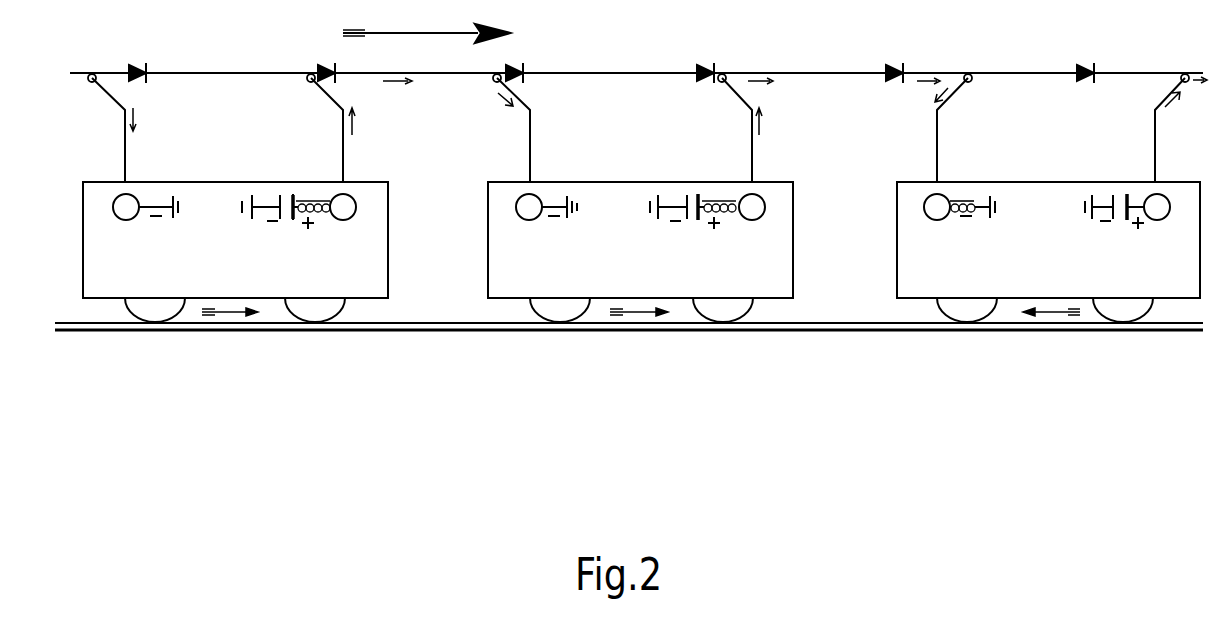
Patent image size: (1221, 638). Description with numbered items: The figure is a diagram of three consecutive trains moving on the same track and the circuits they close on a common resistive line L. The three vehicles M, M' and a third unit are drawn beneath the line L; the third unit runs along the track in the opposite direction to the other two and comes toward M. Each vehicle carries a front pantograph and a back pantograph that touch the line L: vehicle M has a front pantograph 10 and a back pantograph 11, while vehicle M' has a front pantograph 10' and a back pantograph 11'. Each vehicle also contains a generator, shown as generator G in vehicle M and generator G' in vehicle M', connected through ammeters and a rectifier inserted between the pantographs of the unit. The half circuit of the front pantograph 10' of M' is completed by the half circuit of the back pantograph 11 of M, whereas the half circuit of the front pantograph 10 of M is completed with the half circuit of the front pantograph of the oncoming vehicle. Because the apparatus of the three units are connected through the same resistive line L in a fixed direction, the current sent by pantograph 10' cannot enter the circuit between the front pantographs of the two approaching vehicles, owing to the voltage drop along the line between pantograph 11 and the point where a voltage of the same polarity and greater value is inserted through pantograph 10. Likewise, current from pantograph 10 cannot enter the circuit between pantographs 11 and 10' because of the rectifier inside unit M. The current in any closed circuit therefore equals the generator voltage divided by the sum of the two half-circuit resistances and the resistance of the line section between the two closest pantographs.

The resistive line L is at (636, 55).
The front pantograph 10 is at (729, 128).
The back pantograph 11 is at (498, 128).
The front pantograph 10' is at (320, 128).
The back pantograph 11' is at (104, 128).
The vehicle M is at (640, 252).
The vehicle M' is at (235, 252).
The generator G is at (693, 225).
The generator G' is at (286, 225).